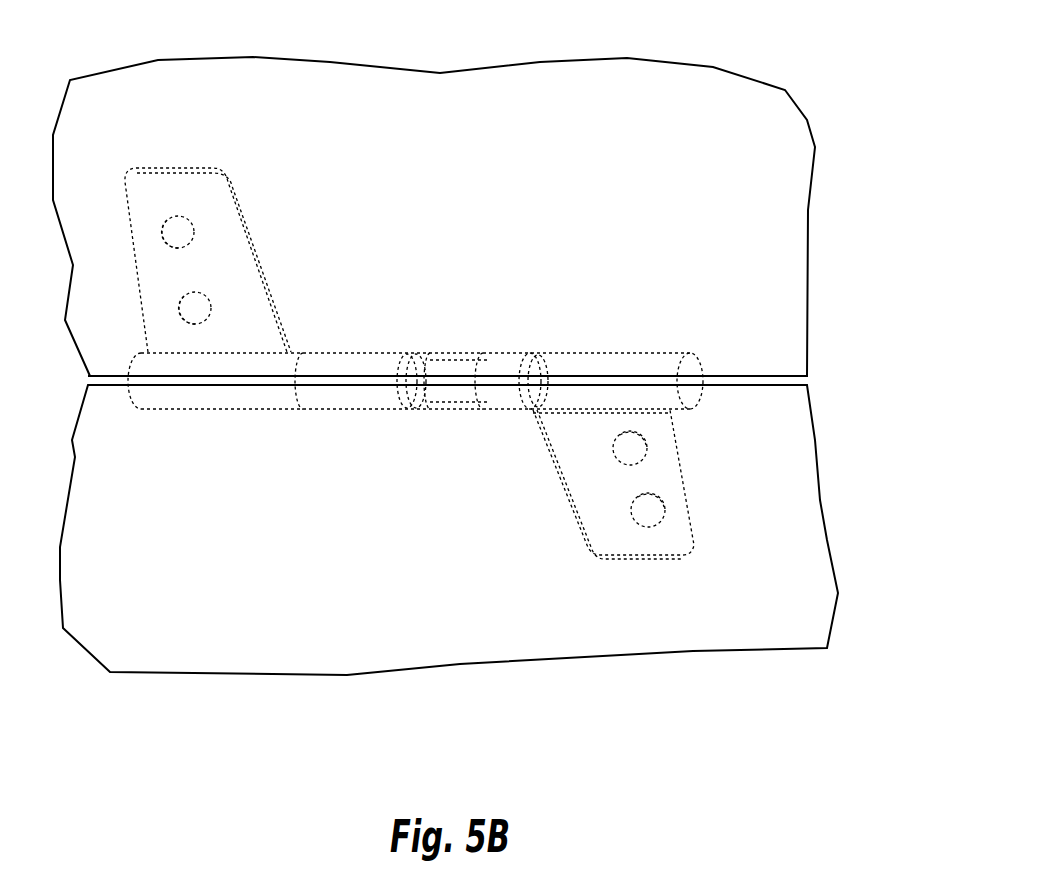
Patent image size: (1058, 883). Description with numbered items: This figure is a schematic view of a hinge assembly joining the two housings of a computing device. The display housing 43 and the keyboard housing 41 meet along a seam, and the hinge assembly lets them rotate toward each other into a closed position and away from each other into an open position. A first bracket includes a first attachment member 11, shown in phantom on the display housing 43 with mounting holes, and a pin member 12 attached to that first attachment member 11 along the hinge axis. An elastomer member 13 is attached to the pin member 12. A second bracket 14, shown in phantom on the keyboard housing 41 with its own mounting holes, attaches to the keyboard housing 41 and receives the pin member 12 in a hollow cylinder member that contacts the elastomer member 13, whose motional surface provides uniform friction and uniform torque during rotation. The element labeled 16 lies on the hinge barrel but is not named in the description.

The display housing 43 is at (640, 105).
The keyboard housing 41 is at (693, 633).
The first attachment member 11 is at (150, 195).
The second bracket 14 is at (680, 537).
The pin member 12 is at (458, 365).
The knuckle 16 is at (492, 362).
The elastomer member 13 is at (507, 368).